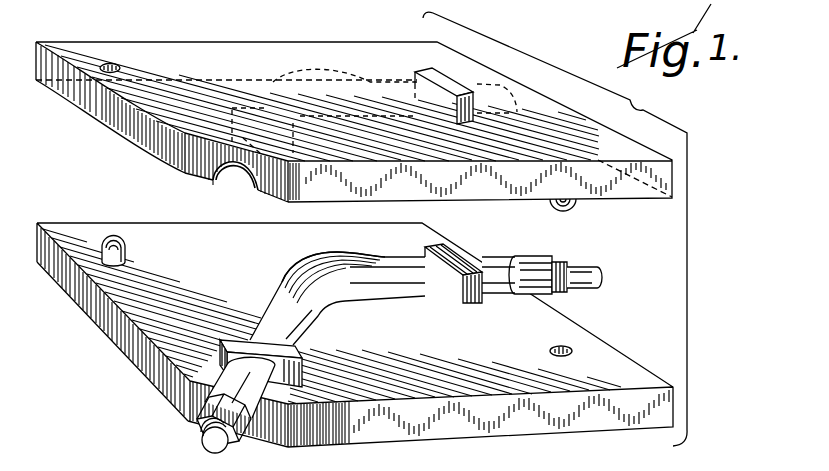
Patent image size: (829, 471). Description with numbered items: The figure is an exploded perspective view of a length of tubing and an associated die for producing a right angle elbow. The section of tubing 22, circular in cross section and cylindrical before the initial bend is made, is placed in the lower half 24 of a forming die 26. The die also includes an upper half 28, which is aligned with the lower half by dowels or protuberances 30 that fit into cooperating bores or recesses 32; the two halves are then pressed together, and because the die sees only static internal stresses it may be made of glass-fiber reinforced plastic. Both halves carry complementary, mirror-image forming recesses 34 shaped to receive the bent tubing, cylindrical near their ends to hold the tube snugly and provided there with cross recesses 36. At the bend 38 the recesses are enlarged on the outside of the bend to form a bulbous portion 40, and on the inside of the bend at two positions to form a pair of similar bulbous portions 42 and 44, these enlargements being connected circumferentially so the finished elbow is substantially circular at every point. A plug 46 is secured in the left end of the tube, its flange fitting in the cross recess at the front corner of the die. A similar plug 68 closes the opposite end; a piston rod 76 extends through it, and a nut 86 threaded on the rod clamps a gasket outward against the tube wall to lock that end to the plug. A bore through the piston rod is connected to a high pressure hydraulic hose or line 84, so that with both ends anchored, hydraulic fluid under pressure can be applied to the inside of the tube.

The section of tubing 22 is at (381, 209).
The lower half of forming die 24 is at (622, 372).
The forming die 26 is at (387, 244).
The upper half of die 28 is at (637, 147).
The dowels or protuberances 30 is at (125, 238).
The bores or recesses 32 is at (112, 62).
The forming recesses 34 is at (230, 179).
The cross recesses 36 is at (420, 67).
The bend 38 is at (328, 267).
The bulbous portion 40 is at (304, 258).
The bulbous portion 42 is at (315, 313).
The bulbous portion 44 is at (362, 304).
The plug 46 is at (194, 430).
The plug 68 is at (558, 304).
The piston rod 76 is at (555, 229).
The high pressure hydraulic hose or line 84 is at (587, 270).
The nut 86 is at (532, 266).